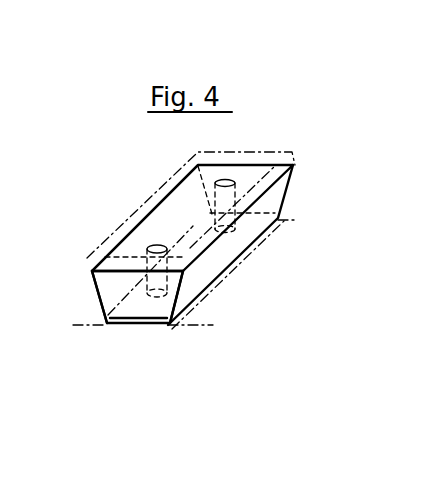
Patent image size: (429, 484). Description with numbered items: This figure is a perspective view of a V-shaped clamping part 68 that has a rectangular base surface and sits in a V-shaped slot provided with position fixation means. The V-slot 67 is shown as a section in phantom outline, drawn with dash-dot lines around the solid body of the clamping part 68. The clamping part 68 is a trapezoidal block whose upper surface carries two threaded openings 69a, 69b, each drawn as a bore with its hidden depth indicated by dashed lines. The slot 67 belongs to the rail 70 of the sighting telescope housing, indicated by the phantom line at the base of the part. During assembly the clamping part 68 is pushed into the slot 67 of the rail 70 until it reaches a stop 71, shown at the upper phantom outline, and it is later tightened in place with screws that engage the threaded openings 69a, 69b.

The V-slot 67 is at (88, 257).
The clamping part 68 is at (101, 295).
The threaded opening 69a is at (153, 245).
The threaded opening 69b is at (216, 181).
The rail 70 is at (213, 327).
The stop 71 is at (296, 163).